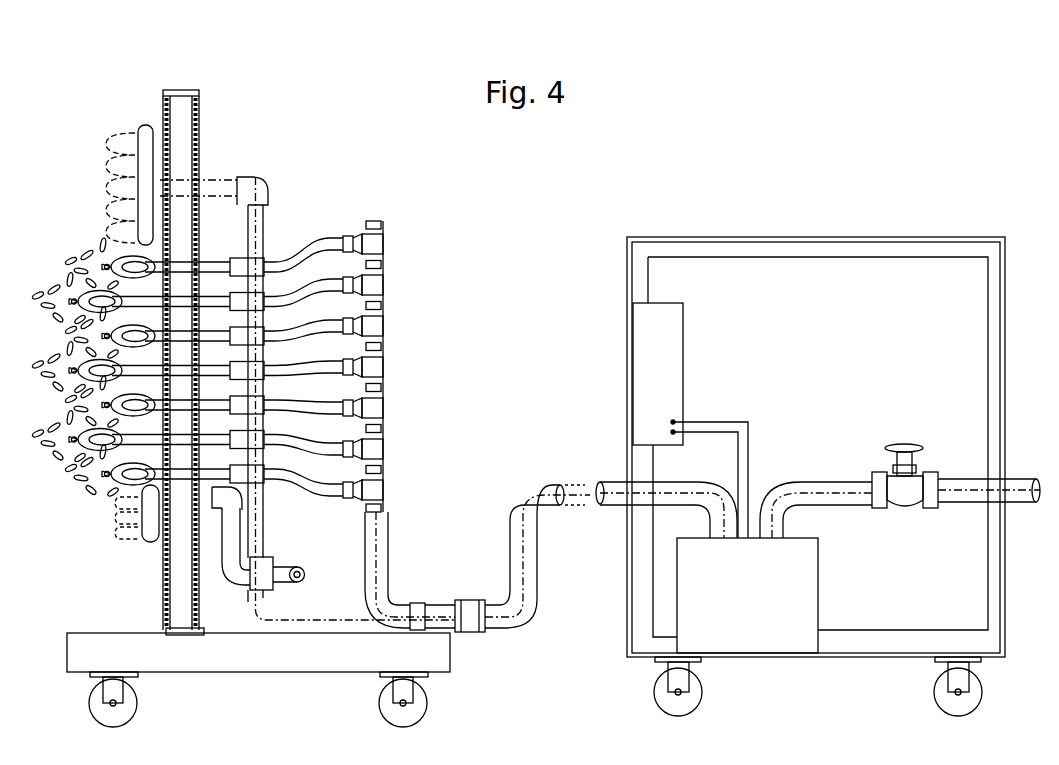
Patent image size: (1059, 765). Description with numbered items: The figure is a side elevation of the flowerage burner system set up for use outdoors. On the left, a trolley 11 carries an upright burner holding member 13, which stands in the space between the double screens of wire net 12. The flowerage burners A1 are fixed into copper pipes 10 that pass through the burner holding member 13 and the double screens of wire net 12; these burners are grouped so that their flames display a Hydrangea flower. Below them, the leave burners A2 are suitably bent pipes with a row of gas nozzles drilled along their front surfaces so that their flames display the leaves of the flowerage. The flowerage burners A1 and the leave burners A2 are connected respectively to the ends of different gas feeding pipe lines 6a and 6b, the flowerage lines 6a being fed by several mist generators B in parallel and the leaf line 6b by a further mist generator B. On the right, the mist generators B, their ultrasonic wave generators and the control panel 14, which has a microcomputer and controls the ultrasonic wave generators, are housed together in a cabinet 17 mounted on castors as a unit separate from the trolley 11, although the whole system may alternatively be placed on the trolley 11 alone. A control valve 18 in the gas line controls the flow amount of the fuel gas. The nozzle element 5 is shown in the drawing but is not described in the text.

The burner holding member 13 is at (186, 86).
The double screens of wire net 12 is at (163, 610).
The copper pipes 10 is at (247, 264).
The spray nozzle 5 is at (126, 255).
The flowerage burners A1 is at (112, 262).
The leave burners A2 is at (148, 543).
The trolley 11 is at (248, 656).
The cabinet 17 is at (1006, 270).
The control panel 14 is at (673, 345).
The mist generators B is at (820, 590).
The gas feeding pipe lines 6a is at (790, 480).
The control valve 18 is at (918, 462).
The gas feeding pipe lines 6b is at (840, 504).